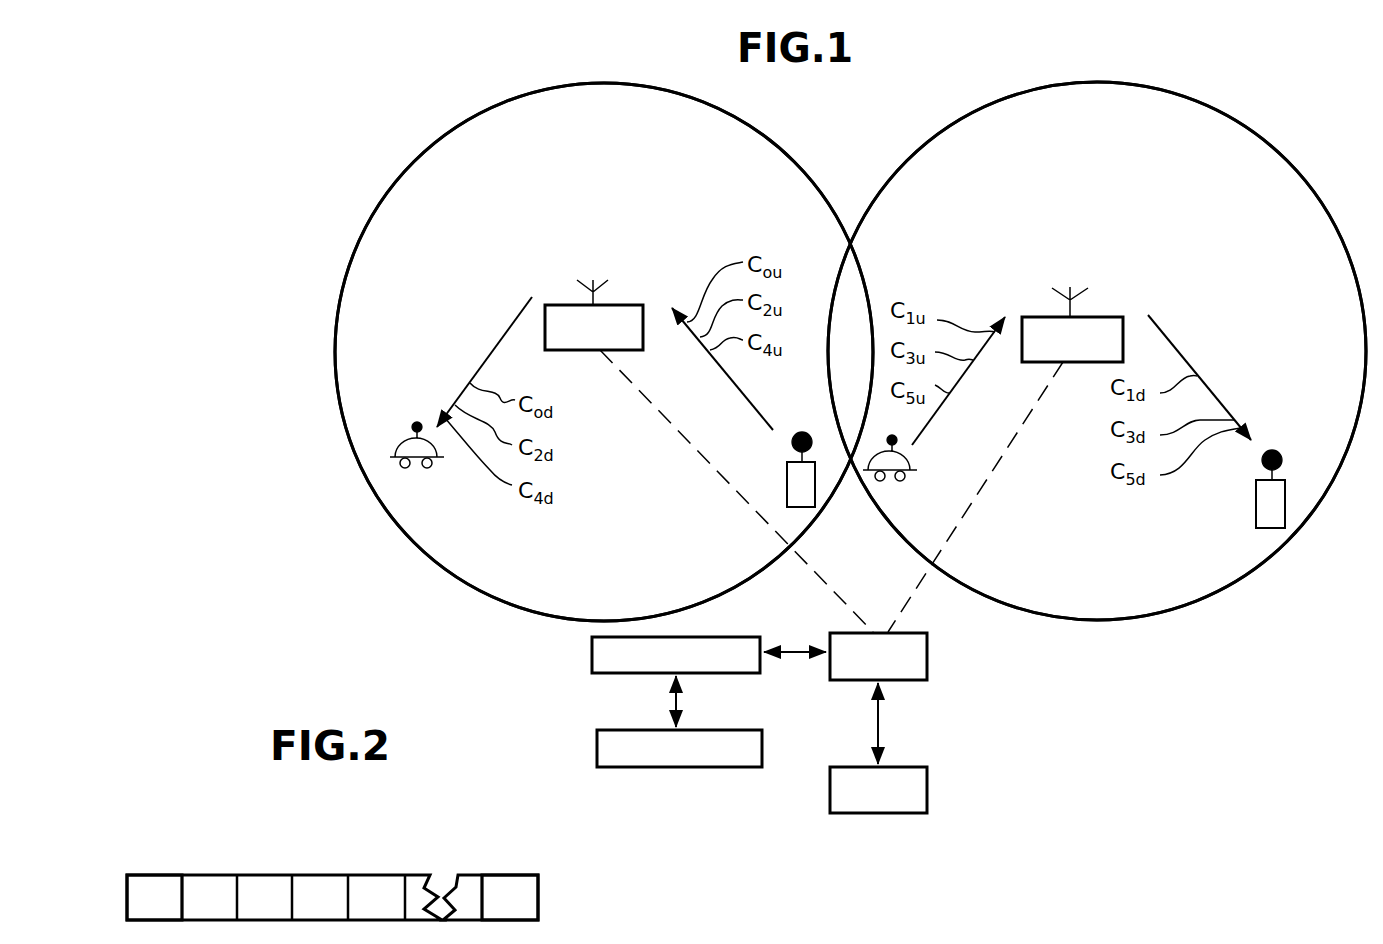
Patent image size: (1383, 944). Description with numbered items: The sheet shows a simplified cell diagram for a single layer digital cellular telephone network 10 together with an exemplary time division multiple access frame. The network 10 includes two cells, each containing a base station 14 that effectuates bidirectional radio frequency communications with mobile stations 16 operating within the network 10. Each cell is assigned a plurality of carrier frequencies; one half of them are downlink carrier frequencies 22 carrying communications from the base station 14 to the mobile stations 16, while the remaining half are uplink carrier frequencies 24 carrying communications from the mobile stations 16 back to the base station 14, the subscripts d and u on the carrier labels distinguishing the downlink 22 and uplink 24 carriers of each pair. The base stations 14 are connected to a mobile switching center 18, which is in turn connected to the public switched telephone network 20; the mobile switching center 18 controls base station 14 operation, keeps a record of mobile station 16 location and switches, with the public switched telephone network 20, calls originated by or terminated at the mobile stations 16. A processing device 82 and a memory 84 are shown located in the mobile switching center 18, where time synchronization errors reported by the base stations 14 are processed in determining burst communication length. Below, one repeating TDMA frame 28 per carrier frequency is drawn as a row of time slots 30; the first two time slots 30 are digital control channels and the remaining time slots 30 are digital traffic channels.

In FIG. 1, the digital cellular telephone network 10 is at (878, 126).
In FIG. 1, the base station 14 is at (562, 305).
In FIG. 1, the mobile station 16 is at (442, 455).
In FIG. 1, the mobile switching center 18 is at (927, 655).
In FIG. 1, the public switched telephone network 20 is at (927, 790).
In FIG. 1, the downlink carrier frequencies 22 is at (483, 366).
In FIG. 1, the uplink carrier frequencies 24 is at (758, 412).
In FIG. 1, the processing device 82 is at (592, 668).
In FIG. 1, the memory 84 is at (670, 767).
In FIG. 2, the TDMA frame 28 is at (330, 855).
In FIG. 2, the time slot 30 is at (144, 876).